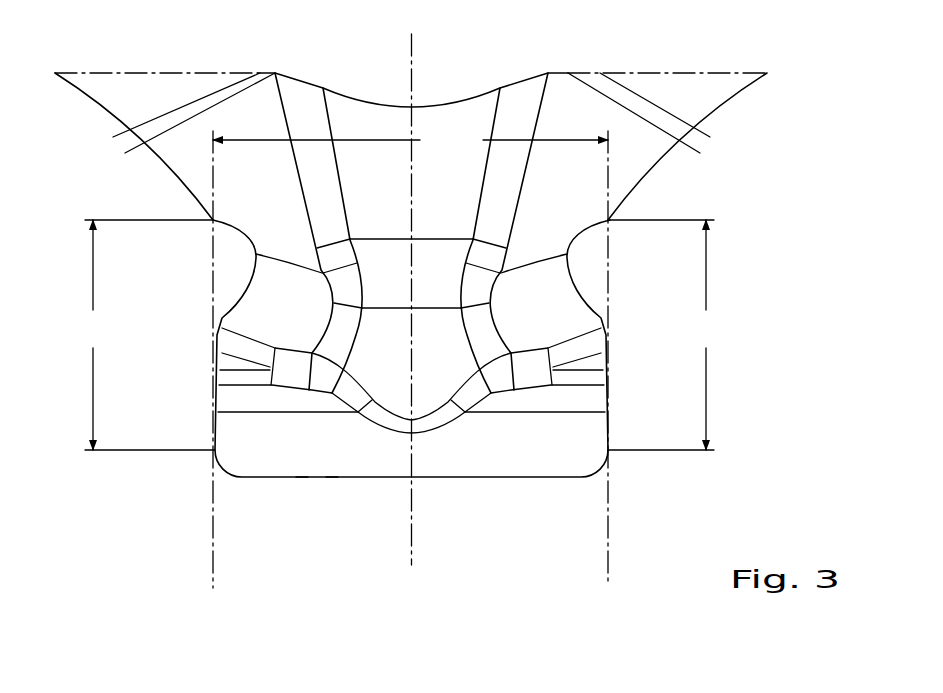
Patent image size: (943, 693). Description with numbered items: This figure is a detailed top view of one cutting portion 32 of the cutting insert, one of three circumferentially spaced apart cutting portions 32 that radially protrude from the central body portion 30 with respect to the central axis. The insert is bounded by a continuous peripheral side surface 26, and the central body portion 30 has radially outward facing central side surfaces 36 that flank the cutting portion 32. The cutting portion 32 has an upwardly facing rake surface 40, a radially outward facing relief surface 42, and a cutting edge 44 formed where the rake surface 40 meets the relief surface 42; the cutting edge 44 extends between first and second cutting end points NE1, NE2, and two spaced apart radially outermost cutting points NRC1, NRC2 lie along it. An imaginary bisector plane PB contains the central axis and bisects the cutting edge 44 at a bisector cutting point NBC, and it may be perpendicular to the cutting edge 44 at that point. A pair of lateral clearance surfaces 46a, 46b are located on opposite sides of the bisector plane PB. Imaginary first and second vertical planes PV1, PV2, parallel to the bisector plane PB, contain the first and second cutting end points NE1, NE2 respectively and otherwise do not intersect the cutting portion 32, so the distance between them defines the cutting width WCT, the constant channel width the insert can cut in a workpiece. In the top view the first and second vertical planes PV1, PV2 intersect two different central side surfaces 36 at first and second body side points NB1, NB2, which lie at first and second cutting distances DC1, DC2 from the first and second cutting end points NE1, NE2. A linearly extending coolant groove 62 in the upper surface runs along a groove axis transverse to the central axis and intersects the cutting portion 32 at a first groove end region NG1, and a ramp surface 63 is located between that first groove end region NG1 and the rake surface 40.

The peripheral side surface 26 is at (70, 104).
The central body portion 30 is at (718, 103).
The central side surfaces 36 is at (130, 158).
The coolant grooves 62 is at (378, 122).
The ramp surface 63 is at (457, 344).
The rake surface 40 is at (282, 452).
The cutting portions 32 is at (503, 404).
The relief surface 42 is at (302, 478).
The cutting edge 44 is at (332, 478).
The lateral clearance surface 46a is at (608, 380).
The lateral clearance surface 46b is at (218, 388).
The imaginary bisector plane PB is at (416, 306).
The imaginary first vertical plane PV1 is at (611, 358).
The imaginary second vertical plane PV2 is at (215, 360).
The cutting width WCT is at (410, 141).
The first cutting distance DC1 is at (669, 335).
The second cutting distance DC2 is at (142, 335).
The first body side point NB1 is at (609, 222).
The second body side point NB2 is at (213, 222).
The first cutting end point NE1 is at (610, 452).
The second cutting end point NE2 is at (213, 452).
The radially outermost cutting point NRC1 is at (582, 478).
The radially outermost cutting point NRC2 is at (243, 478).
The bisector cutting point NBC is at (412, 478).
The first groove end region NG1 is at (462, 278).